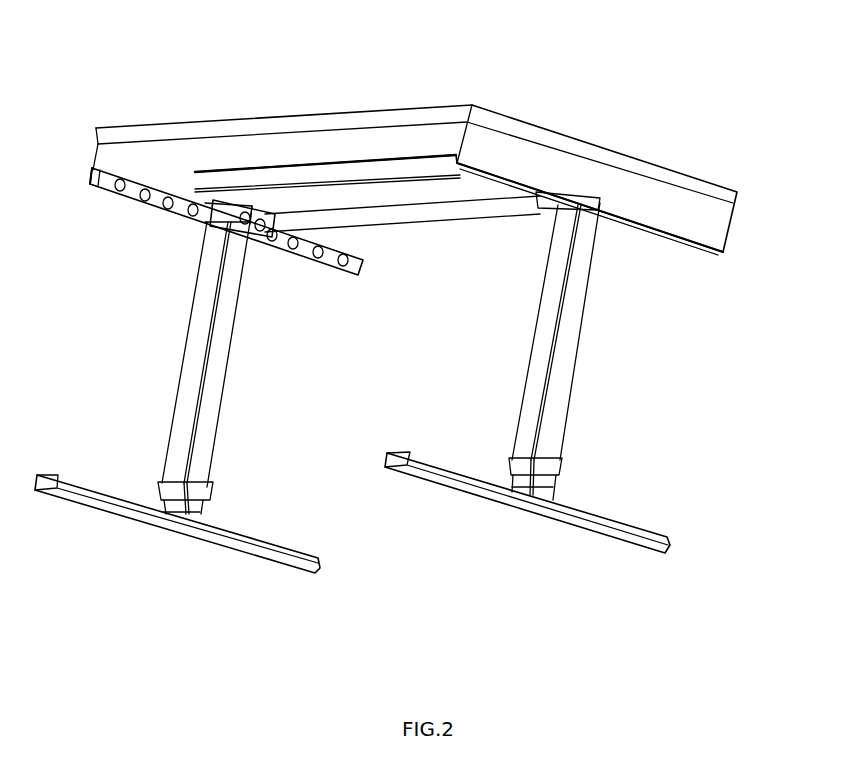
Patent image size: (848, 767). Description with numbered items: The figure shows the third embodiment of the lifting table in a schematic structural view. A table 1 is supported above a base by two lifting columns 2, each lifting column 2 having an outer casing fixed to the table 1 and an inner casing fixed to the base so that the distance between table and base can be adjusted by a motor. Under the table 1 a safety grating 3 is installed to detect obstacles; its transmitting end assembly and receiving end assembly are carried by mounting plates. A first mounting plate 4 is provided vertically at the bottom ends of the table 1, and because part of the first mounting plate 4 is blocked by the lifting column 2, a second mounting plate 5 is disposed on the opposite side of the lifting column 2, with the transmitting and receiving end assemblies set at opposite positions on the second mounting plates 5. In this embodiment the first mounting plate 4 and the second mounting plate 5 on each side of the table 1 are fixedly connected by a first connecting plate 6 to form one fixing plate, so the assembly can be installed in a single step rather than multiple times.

The table 1 is at (124, 128).
The lifting column 2 is at (563, 308).
The safety grating 3 is at (140, 175).
The first mounting plate 4 is at (195, 170).
The second mounting plate 5 is at (318, 206).
The first connecting plate 6 is at (278, 216).